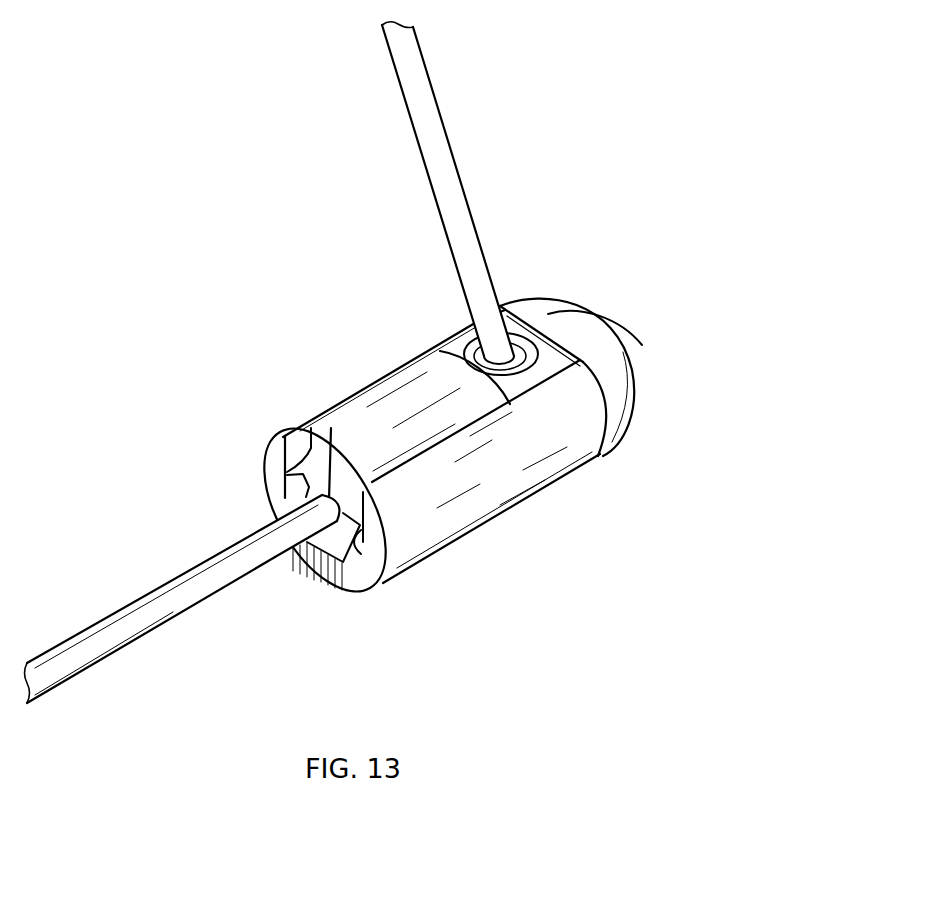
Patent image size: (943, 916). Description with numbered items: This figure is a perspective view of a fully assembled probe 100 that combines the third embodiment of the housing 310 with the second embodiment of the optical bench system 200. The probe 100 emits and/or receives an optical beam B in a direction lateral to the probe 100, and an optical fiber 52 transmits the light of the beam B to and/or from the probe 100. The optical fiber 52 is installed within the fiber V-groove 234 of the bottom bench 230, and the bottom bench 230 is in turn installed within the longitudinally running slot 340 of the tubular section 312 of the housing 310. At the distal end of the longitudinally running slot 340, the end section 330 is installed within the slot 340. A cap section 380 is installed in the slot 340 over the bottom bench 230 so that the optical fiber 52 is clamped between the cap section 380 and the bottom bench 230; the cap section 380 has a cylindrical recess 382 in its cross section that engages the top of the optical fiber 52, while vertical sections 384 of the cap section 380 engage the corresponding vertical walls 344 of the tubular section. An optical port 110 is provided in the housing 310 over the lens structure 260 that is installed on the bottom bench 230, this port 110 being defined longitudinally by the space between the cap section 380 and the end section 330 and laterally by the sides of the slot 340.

The probe 100 is at (435, 323).
The optical port 110 is at (516, 311).
The optical bench system 200 is at (272, 511).
The bottom bench 230 is at (318, 552).
The fiber V-groove 234 is at (311, 428).
The lens structure 260 is at (641, 344).
The housing 310 is at (263, 449).
The tubular section 312 is at (567, 453).
The end section 330 is at (552, 328).
The longitudinally running slot 340 is at (434, 324).
The vertical walls 344 is at (280, 488).
The cap section 380 is at (430, 422).
The cylindrical recess 382 is at (331, 428).
The vertical sections 384 is at (281, 457).
The optical fiber 52 is at (182, 599).
The optical beam B is at (431, 186).